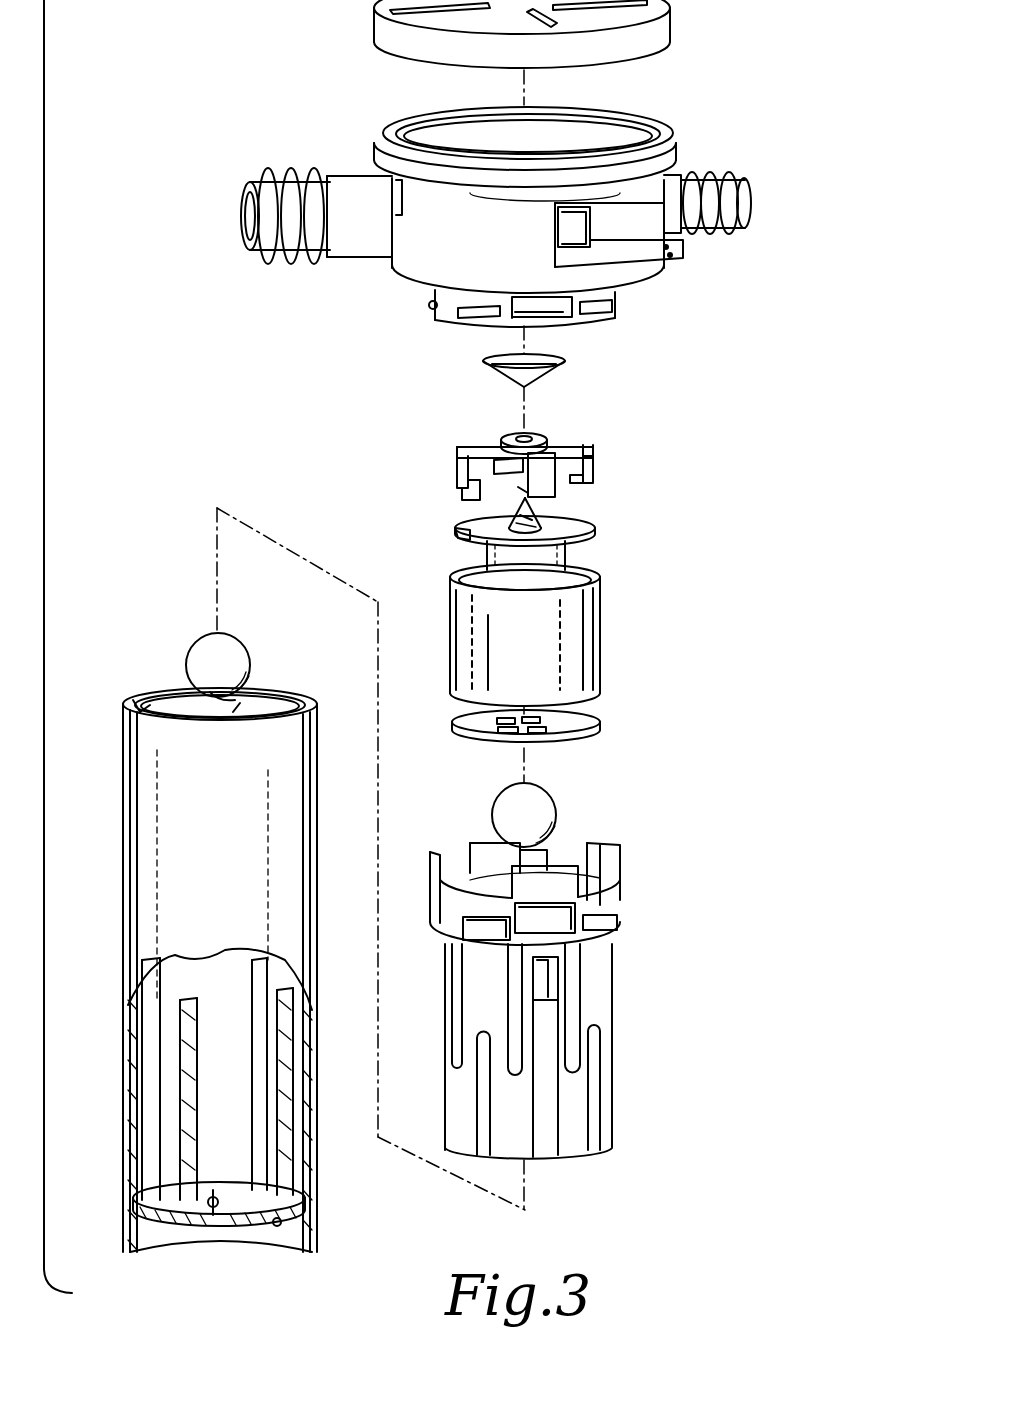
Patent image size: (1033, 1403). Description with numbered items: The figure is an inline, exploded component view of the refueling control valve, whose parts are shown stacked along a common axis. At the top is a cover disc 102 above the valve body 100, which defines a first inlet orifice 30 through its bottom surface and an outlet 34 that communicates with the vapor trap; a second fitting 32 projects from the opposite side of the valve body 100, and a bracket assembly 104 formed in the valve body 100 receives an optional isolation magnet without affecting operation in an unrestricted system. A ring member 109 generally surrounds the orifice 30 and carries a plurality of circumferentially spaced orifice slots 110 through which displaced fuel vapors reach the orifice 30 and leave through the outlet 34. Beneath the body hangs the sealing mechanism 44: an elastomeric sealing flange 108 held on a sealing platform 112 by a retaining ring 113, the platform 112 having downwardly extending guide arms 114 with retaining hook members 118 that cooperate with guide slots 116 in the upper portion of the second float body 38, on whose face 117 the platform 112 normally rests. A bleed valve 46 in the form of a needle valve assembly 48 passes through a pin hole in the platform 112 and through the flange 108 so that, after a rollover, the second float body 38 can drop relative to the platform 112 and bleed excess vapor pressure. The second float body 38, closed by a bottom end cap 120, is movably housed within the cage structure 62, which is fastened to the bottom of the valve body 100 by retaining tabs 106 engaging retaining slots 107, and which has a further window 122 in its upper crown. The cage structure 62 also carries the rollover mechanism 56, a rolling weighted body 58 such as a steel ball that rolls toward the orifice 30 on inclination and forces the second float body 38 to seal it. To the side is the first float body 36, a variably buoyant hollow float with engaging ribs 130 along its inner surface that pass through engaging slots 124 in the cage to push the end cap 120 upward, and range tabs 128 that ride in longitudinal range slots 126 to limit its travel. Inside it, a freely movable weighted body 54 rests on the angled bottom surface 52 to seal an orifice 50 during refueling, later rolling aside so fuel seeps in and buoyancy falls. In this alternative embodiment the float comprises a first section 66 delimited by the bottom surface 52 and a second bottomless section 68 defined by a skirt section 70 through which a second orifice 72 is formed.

The first inlet orifice 30 is at (560, 310).
The outlet fitting 32 is at (722, 232).
The outlet 34 is at (248, 240).
The first float body 36 is at (99, 838).
The second float body 38 is at (598, 592).
The sealing mechanism 44 is at (651, 395).
The bleed valve 46 is at (558, 432).
The needle valve assembly 48 is at (562, 525).
The orifice 50 is at (215, 1215).
The bottom surface 52 is at (225, 1180).
The weighted body 54 is at (233, 656).
The rollover mechanism 56 is at (480, 826).
The weighted body 58 is at (550, 810).
The cage structure 62 is at (542, 989).
The first section 66 is at (122, 918).
The second bottomless section 68 is at (165, 1237).
The skirt section 70 is at (318, 1215).
The second orifice 72 is at (280, 1240).
The valve body 100 is at (398, 285).
The cover disc 102 is at (630, 45).
The bracket assembly 104 is at (640, 245).
The retaining tabs 106 is at (478, 318).
The retaining slots 107 is at (603, 925).
The sealing flange 108 is at (563, 362).
The ring member 109 is at (430, 308).
The orifice slots 110 is at (513, 320).
The sealing platform 112 is at (493, 432).
The retaining ring 113 is at (555, 448).
The guide arms 114 is at (597, 460).
The guide slots 116 is at (590, 530).
The face 117 is at (468, 538).
The retaining hook members 118 is at (470, 492).
The bottom end cap 120 is at (590, 732).
The window 122 is at (545, 905).
The engaging slots 124 is at (487, 1115).
The range slots 126 is at (545, 985).
The range tabs 128 is at (150, 660).
The engaging ribs 130 is at (240, 1020).